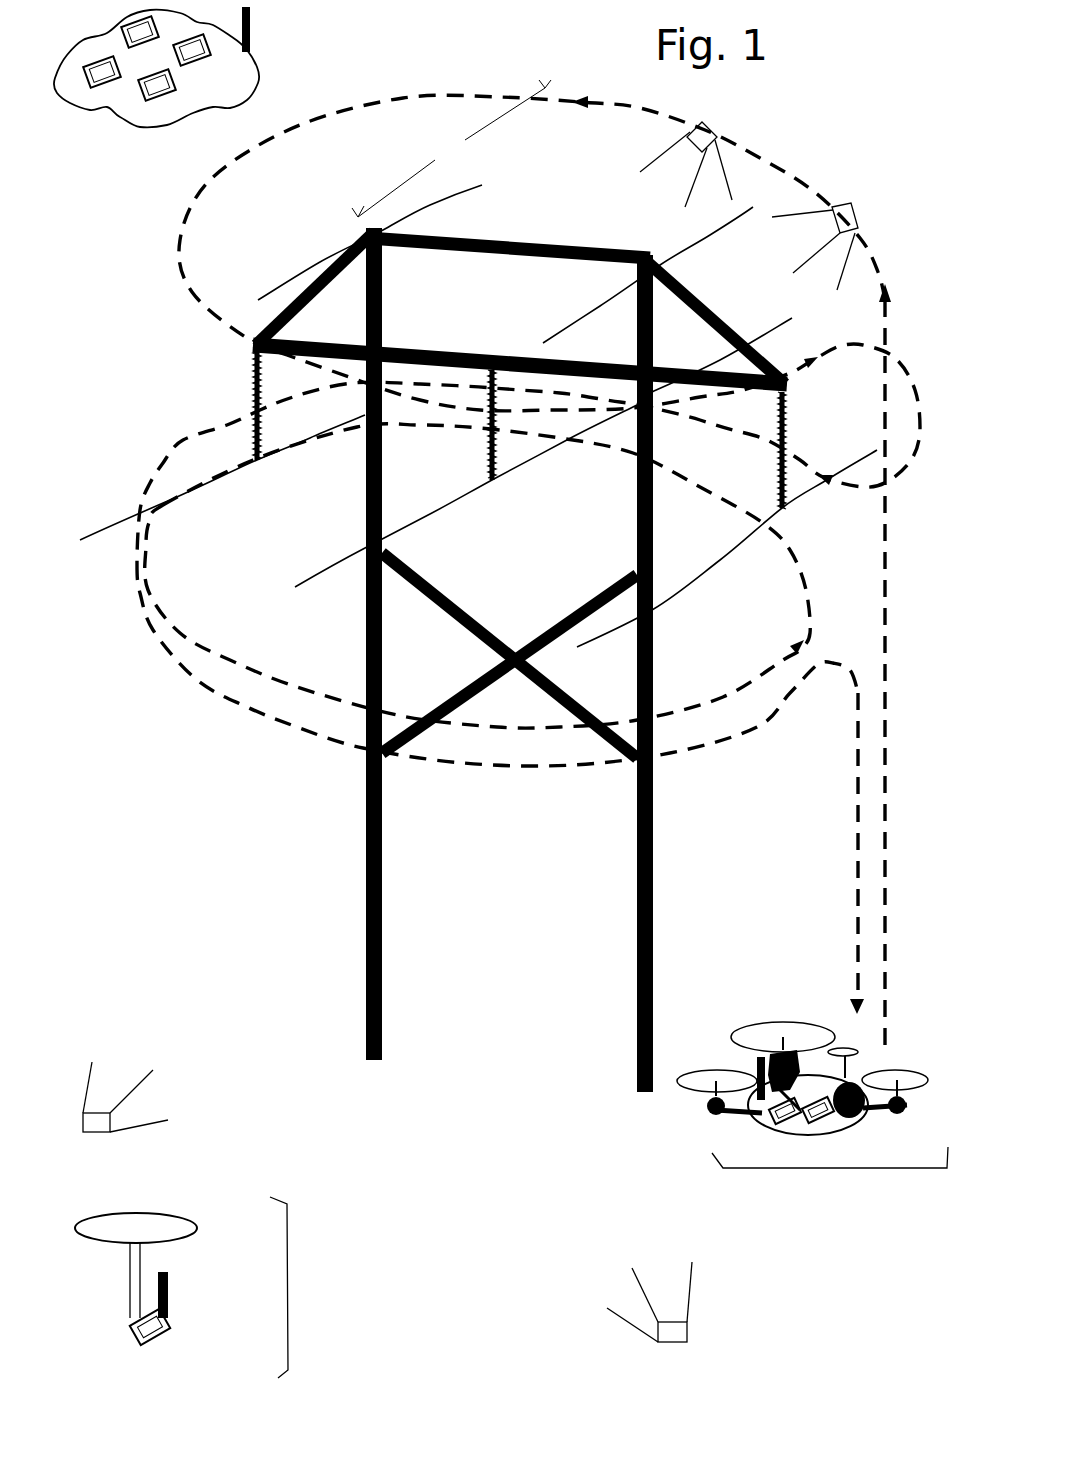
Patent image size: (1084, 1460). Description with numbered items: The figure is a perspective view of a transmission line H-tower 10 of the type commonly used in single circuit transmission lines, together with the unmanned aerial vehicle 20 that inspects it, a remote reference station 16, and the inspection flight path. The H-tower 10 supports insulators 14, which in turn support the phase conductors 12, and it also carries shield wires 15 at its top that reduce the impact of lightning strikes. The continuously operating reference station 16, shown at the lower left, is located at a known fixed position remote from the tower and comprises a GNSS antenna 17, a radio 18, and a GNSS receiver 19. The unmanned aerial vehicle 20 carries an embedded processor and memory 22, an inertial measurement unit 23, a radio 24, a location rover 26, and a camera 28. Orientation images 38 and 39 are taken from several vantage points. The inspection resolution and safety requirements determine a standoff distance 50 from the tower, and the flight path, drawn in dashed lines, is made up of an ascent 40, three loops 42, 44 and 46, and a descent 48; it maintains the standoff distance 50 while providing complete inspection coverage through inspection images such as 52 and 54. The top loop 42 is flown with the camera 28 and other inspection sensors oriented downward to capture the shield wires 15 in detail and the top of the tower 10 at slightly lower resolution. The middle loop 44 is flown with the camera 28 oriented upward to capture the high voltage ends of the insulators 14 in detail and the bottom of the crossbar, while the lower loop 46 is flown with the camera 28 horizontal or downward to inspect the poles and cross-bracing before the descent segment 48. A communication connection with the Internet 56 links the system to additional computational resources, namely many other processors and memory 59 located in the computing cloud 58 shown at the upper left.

The transmission line H-tower 10 is at (383, 893).
The phase conductors 12 is at (605, 632).
The insulators 14 is at (252, 362).
The shield wires 15 is at (660, 257).
The continuously operating reference station 16 is at (219, 1287).
The GNSS antenna 17 is at (197, 1230).
The radio 18 is at (168, 1275).
The GNSS receiver 19 is at (152, 1340).
The unmanned aerial vehicle 20 is at (805, 1094).
The embedded processor and memory 22 is at (817, 1122).
The inertial measurement unit 23 is at (772, 1121).
The radio 24 is at (757, 1077).
The location rover 26 is at (848, 1047).
The camera 28 is at (863, 1118).
The orientation image 38 is at (95, 1132).
The orientation image 39 is at (687, 1322).
The ascent segment 40 is at (886, 772).
The top loop 42 is at (185, 265).
The middle loop 44 is at (217, 423).
The lower loop 46 is at (233, 697).
The descent segment 48 is at (857, 855).
The standoff distance 50 is at (451, 148).
The inspection image 52 is at (858, 218).
The inspection image 54 is at (702, 122).
The communication connection with the Internet 56 is at (250, 20).
The computing cloud 58 is at (186, 71).
The processors and memory 59 is at (172, 92).